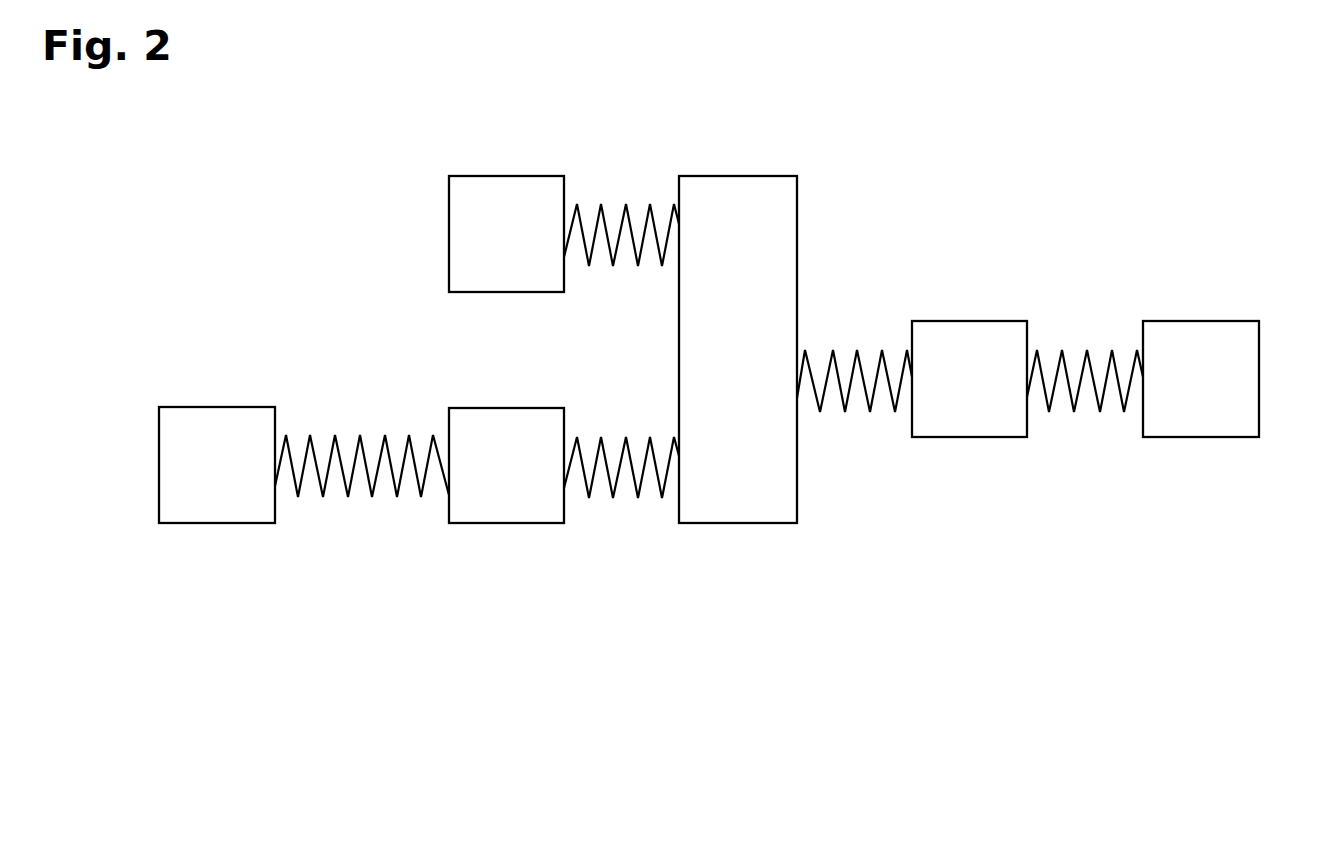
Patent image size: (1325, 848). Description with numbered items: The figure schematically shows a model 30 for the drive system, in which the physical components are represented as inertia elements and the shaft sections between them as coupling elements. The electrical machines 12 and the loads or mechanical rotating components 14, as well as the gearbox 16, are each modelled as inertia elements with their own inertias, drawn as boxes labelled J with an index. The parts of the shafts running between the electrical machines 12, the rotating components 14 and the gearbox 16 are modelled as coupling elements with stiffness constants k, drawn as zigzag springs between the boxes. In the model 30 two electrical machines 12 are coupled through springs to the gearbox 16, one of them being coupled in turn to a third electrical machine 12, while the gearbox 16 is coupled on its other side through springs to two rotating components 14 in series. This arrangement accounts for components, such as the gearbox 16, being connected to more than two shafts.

The electrical machines 12 is at (509, 176).
The mechanical rotating components 14 is at (972, 321).
The gearbox 16 is at (740, 176).
The model 30 is at (1236, 164).